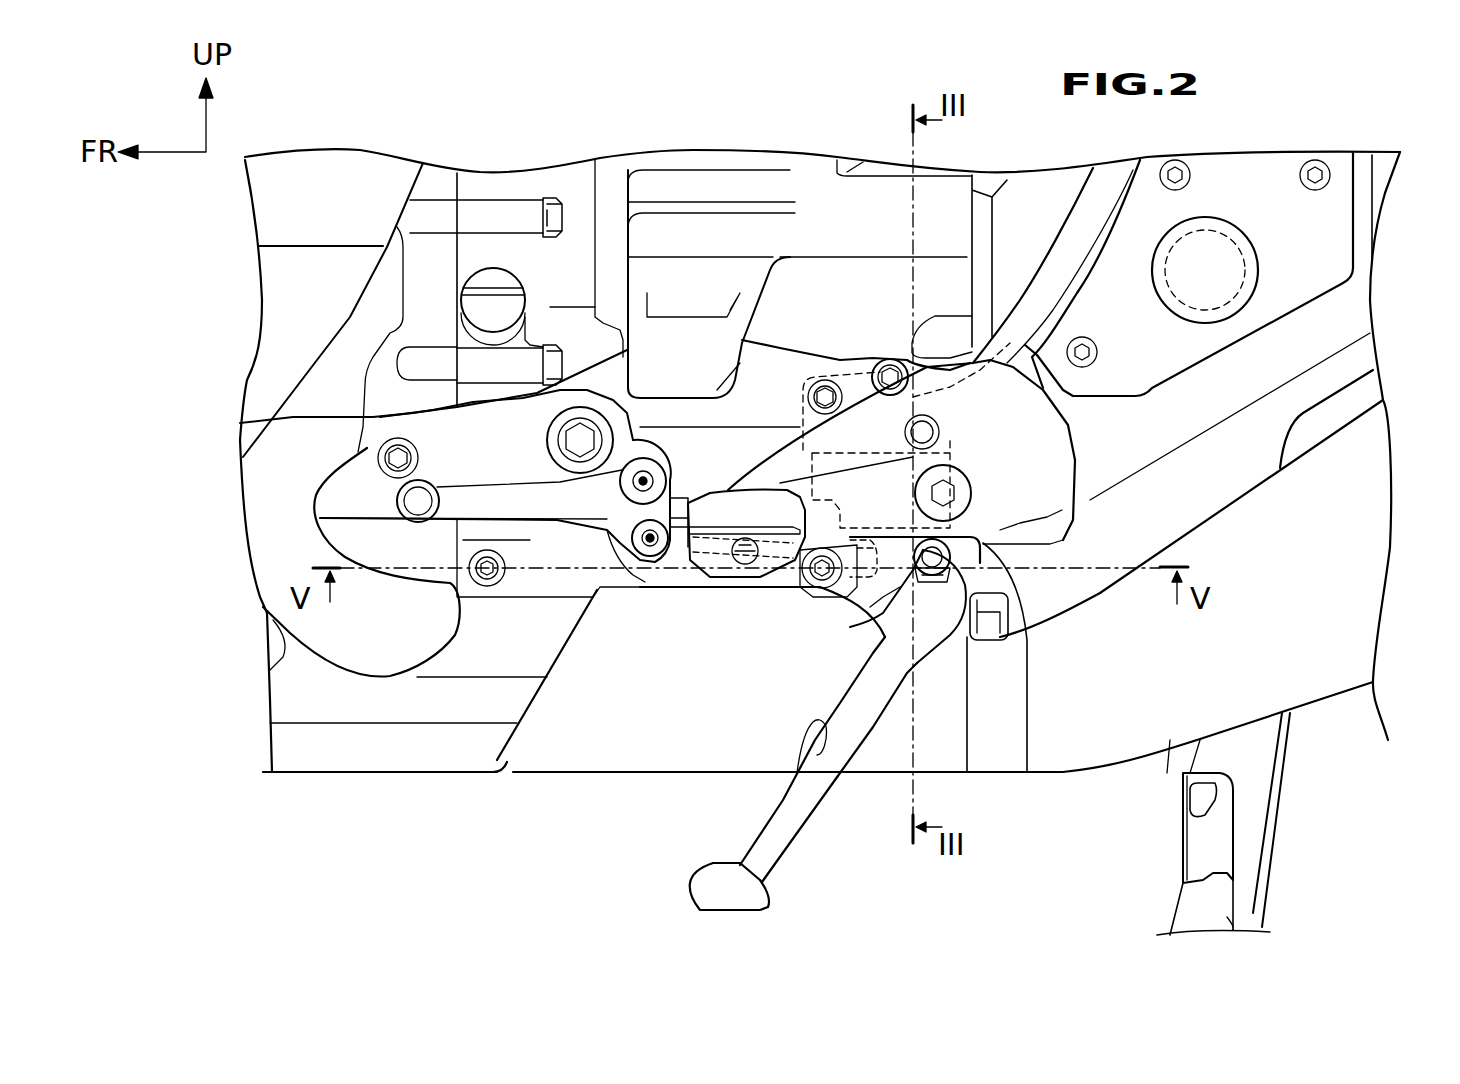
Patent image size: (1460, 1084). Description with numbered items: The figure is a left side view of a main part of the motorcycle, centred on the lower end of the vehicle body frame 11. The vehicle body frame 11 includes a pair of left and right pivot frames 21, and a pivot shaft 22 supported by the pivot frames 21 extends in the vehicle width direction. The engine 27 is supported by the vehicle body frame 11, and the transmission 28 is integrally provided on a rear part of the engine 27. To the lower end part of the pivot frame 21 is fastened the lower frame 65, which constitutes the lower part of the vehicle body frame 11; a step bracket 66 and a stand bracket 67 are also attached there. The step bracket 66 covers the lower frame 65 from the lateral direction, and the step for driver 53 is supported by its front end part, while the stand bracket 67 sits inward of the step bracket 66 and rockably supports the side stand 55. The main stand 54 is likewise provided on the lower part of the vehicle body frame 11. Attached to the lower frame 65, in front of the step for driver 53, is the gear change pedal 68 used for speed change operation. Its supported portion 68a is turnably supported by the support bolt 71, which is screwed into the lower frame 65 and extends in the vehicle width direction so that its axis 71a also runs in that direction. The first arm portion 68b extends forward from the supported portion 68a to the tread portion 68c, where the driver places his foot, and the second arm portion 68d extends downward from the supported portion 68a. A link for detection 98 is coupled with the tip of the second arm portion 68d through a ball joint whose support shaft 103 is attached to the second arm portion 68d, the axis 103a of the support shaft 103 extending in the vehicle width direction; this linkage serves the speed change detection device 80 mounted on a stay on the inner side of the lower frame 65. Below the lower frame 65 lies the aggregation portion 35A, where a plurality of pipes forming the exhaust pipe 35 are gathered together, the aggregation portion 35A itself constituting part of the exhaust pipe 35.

The vehicle body frame 11 is at (1376, 160).
The pivot frame 21 is at (1330, 322).
The pivot shaft 22 is at (1223, 237).
The engine 27 is at (423, 258).
The transmission 28 is at (760, 228).
The exhaust pipe 35 is at (373, 693).
The aggregation portion 35A is at (708, 730).
The step for driver 53 is at (723, 505).
The main stand 54 is at (1190, 840).
The side stand 55 is at (793, 817).
The lower frame 65 is at (680, 413).
The step bracket 66 is at (860, 395).
The stand bracket 67 is at (1017, 585).
The gear change pedal 68 is at (418, 480).
The supported portion 68a is at (647, 425).
The first arm portion 68b is at (517, 513).
The tread portion 68c is at (398, 497).
The second arm portion 68d is at (632, 590).
The support bolt 71 is at (641, 478).
The axis 71a is at (650, 470).
The speed change detection device 80 is at (1007, 350).
The link for detection 98 is at (686, 550).
The support shaft 103 is at (668, 556).
The axis 103a is at (643, 560).